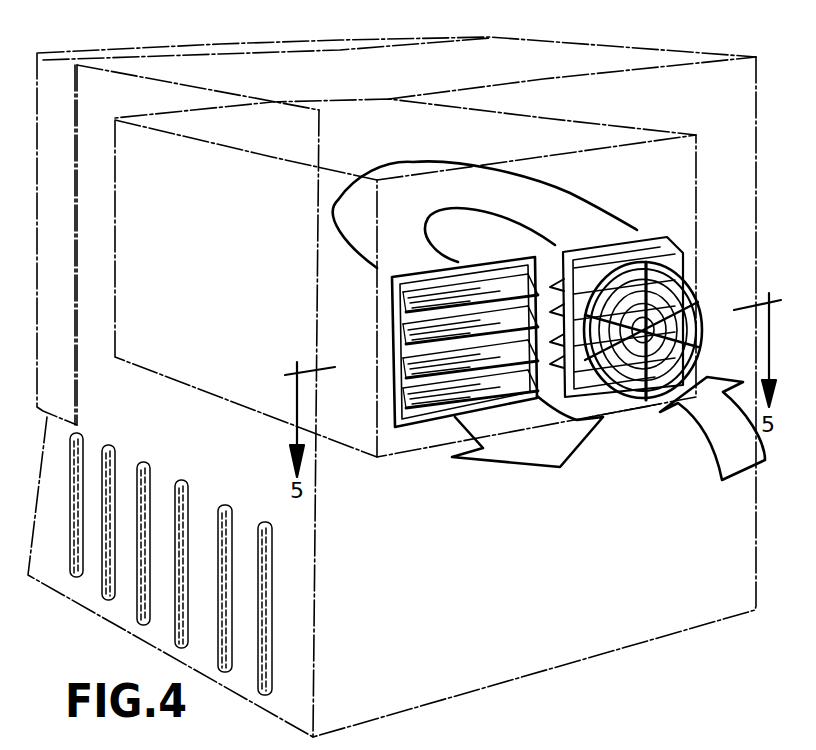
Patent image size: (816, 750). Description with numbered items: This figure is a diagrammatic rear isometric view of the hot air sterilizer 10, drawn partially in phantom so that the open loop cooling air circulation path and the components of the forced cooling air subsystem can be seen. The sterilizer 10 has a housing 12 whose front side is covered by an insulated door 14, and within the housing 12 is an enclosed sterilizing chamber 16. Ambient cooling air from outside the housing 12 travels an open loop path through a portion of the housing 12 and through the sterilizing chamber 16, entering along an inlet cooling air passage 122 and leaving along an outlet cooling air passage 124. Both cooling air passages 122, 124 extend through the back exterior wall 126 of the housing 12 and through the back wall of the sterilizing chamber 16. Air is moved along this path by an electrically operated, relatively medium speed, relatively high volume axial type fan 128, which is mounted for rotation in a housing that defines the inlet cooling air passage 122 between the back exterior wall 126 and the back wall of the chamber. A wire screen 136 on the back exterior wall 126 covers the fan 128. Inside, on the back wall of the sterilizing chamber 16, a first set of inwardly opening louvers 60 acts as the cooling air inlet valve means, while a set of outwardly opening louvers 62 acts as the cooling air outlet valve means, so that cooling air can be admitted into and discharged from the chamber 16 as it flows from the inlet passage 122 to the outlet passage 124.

The hot air sterilizer 10 is at (285, 34).
The housing 12 is at (545, 55).
The insulated door 14 is at (103, 48).
The sterilizing chamber 16 is at (210, 344).
The inwardly opening louvers 60 is at (643, 233).
The outwardly opening louvers 62 is at (394, 299).
The inlet cooling air passage 122 is at (610, 242).
The outlet cooling air passage 124 is at (467, 277).
The back exterior wall 126 is at (587, 506).
The axial fan 128 is at (702, 342).
The wire screen 136 is at (617, 401).